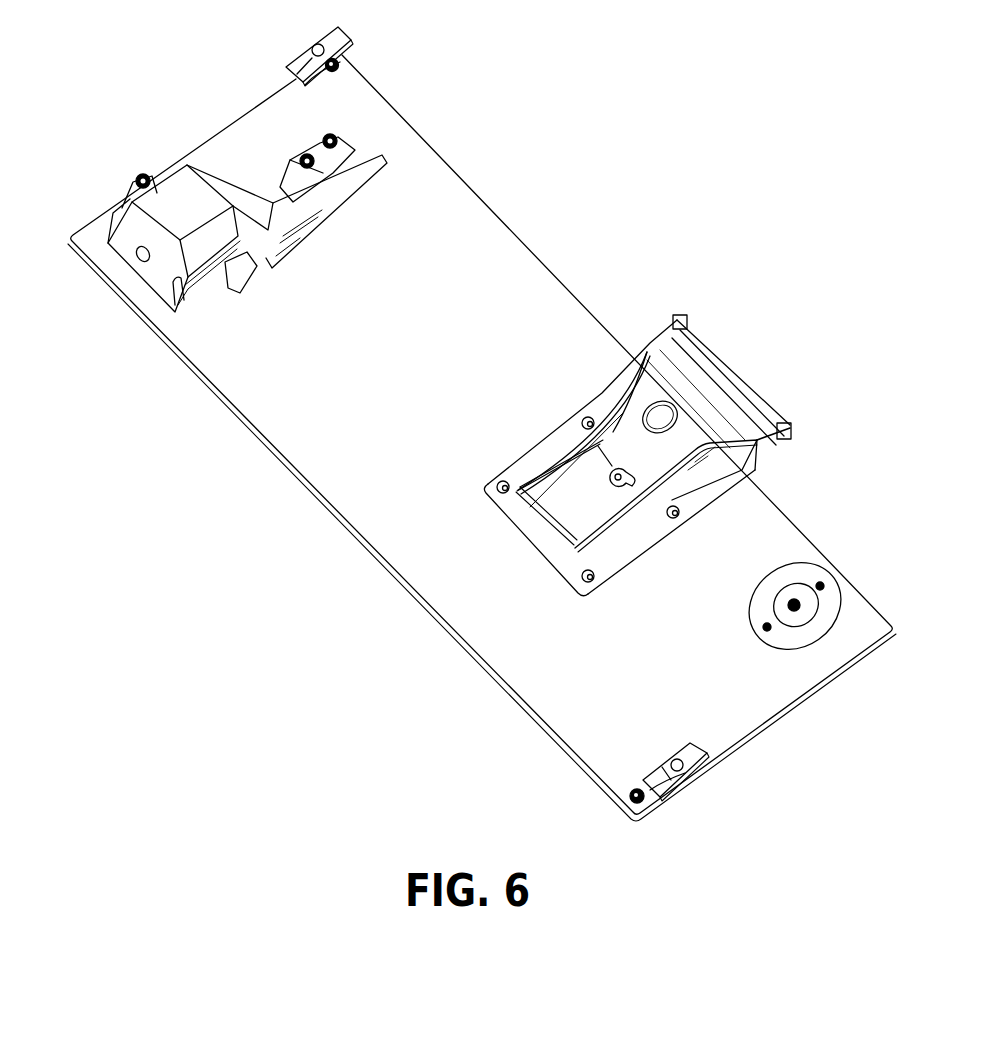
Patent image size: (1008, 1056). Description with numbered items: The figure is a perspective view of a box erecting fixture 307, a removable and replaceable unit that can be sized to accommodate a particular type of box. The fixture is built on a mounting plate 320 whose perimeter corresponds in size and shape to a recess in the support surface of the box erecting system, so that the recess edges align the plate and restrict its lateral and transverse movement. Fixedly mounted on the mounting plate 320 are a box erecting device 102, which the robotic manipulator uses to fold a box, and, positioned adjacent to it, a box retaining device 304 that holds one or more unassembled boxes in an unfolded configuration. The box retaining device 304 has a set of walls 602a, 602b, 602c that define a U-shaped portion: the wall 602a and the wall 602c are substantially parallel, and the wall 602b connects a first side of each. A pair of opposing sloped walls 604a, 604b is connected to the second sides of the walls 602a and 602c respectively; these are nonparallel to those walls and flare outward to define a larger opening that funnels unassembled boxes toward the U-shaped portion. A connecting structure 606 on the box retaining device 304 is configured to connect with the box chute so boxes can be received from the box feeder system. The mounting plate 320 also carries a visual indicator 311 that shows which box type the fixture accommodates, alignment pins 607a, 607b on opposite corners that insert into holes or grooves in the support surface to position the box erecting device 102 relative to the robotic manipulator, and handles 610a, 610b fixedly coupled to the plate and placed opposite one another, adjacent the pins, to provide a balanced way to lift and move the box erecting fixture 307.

The box erecting device 102 is at (210, 121).
The box retaining device 304 is at (470, 476).
The box erecting fixture 307 is at (96, 122).
The visual indicator 311 is at (799, 602).
The mounting plate 320 is at (490, 246).
The wall 602a is at (547, 465).
The wall 602b is at (535, 528).
The wall 602c is at (630, 530).
The sloped wall 604a is at (625, 388).
The sloped wall 604b is at (718, 492).
The connecting structure 606 is at (735, 385).
The alignment pin 607a is at (340, 63).
The alignment pin 607b is at (633, 790).
The handle 610a is at (312, 52).
The handle 610b is at (668, 770).